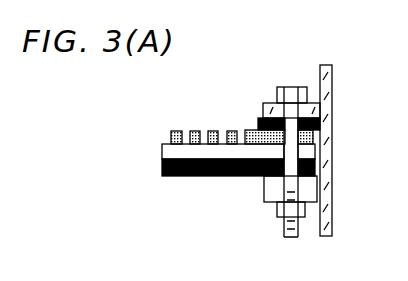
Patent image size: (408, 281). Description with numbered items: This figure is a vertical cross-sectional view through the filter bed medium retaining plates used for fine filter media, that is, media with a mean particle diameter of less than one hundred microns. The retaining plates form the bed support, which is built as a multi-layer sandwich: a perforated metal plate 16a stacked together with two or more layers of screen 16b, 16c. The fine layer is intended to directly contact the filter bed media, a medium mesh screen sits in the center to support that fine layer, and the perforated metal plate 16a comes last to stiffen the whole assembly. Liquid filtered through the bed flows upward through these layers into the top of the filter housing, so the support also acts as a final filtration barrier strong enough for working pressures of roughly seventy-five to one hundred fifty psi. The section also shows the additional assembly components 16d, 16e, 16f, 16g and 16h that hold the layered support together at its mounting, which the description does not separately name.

The perforated metal plate 16a is at (194, 131).
The layer of screen 16b is at (158, 154).
The layer of screen 16c is at (174, 181).
The nut 16d is at (258, 190).
The bolt head 16e is at (273, 84).
The insulating block 16f is at (254, 123).
The bolt shaft / lock nut 16g is at (276, 215).
The mounting plate 16h is at (322, 65).